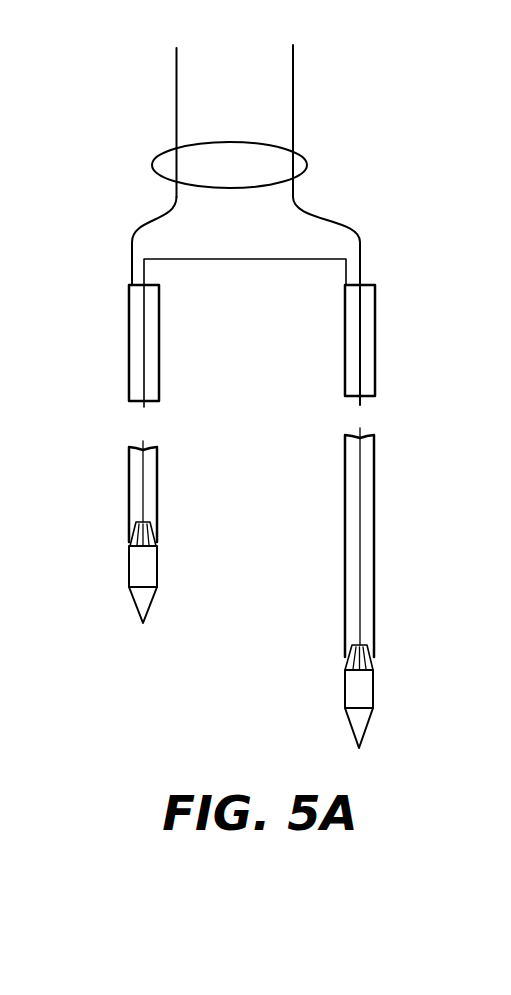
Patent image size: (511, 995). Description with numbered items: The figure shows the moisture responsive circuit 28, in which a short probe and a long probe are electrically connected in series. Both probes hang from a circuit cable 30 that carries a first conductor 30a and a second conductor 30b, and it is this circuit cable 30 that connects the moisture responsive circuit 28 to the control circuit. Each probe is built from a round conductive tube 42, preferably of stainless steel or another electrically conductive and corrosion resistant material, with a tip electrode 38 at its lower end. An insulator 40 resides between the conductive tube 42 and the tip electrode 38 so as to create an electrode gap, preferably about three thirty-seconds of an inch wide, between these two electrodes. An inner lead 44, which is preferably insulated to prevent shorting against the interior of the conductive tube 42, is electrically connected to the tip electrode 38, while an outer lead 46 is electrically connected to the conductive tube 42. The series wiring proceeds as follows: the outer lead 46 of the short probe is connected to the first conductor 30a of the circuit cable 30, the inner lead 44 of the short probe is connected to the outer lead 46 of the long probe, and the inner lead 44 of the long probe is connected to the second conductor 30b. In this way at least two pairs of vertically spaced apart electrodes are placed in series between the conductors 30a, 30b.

The moisture responsive circuit 28 is at (265, 226).
The circuit cable 30 is at (230, 127).
The first conductor 30a is at (176, 92).
The second conductor 30b is at (293, 97).
The outer lead 46 is at (132, 250).
The inner lead 44 is at (142, 470).
The conductive tube 42 is at (129, 510).
The insulator 40 is at (130, 545).
The tip electrode 38 is at (103, 547).